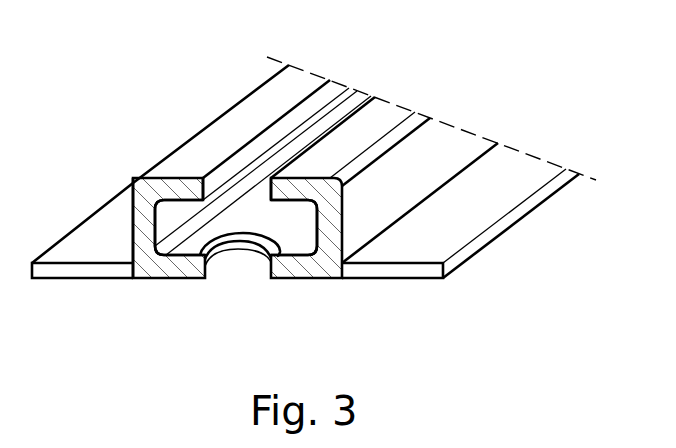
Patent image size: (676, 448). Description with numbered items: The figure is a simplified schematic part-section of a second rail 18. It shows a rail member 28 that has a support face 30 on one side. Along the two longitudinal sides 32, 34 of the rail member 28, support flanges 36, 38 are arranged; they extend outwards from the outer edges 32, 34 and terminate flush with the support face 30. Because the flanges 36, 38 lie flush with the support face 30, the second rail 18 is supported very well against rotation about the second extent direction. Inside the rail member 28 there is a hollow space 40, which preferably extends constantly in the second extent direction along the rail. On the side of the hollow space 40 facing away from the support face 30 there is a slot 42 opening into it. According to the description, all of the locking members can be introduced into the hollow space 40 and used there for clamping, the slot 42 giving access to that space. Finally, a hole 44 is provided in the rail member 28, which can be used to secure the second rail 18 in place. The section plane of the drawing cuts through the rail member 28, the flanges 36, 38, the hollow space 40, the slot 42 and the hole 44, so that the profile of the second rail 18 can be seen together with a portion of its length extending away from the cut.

The second rail 18 is at (277, 93).
The rail member 28 is at (409, 94).
The support face 30 is at (310, 279).
The longitudinal side 32 is at (445, 142).
The longitudinal side 34 is at (133, 192).
The support flange 36 is at (521, 173).
The support flange 38 is at (98, 252).
The hollow space 40 is at (188, 248).
The slot 42 is at (361, 97).
The hole 44 is at (235, 267).